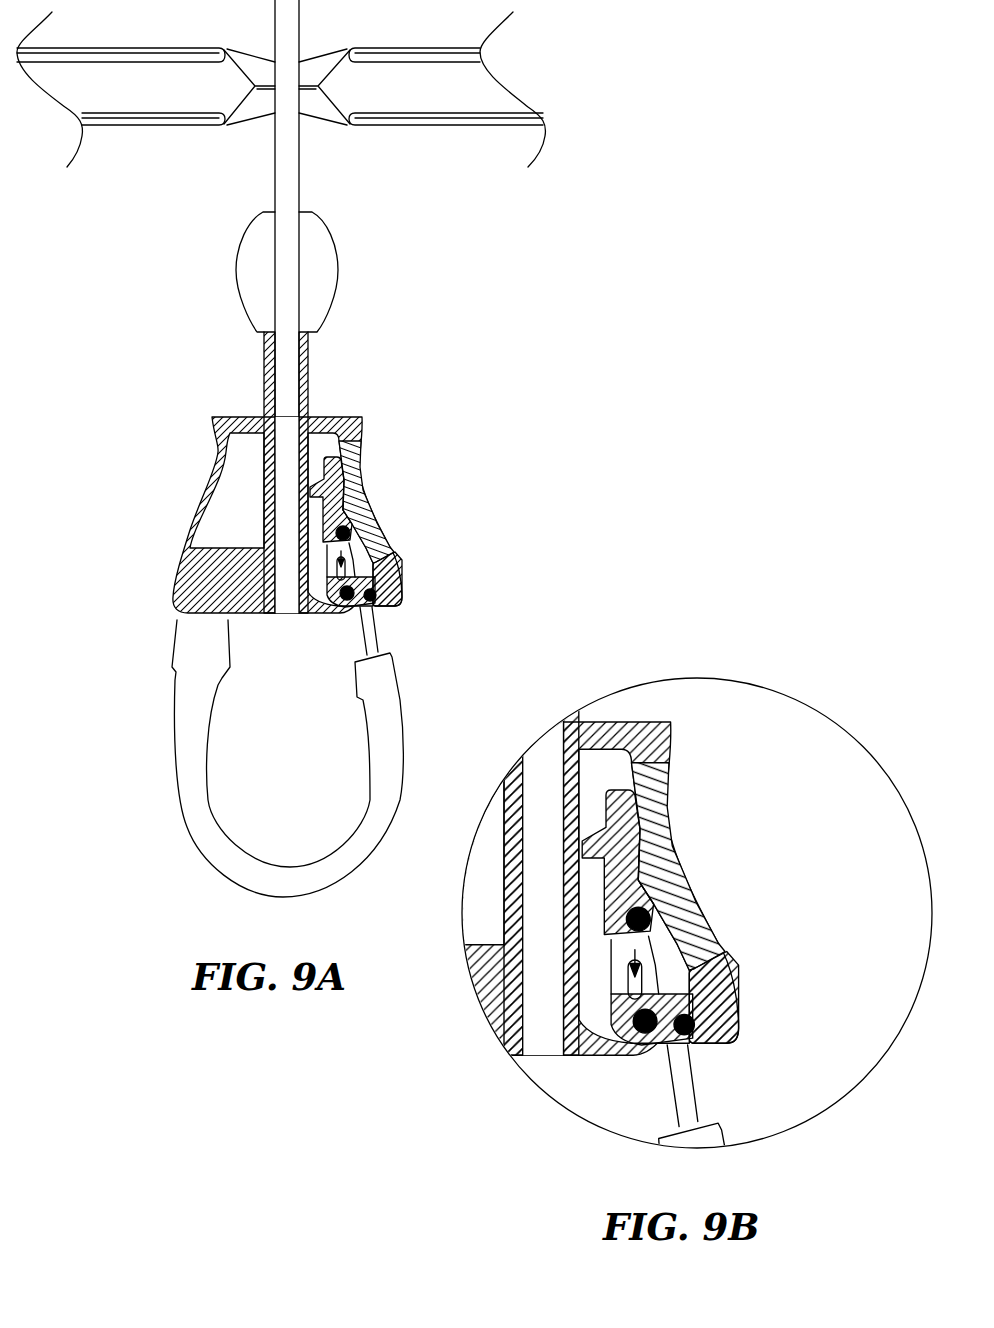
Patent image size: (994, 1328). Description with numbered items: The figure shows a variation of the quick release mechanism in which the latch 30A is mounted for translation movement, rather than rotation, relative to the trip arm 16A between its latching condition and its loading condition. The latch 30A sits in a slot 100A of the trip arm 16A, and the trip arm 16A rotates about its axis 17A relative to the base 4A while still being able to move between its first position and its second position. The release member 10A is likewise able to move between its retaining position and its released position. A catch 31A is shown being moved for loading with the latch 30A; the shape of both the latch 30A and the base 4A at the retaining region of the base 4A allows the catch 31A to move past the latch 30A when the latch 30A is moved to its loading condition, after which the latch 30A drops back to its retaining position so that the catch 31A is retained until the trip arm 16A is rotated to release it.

The release member 10A is at (655, 743).
The trip arm 16A is at (618, 820).
The axis 17A is at (650, 900).
The slot 100A is at (623, 963).
The latch 30A is at (722, 978).
The base 4A is at (730, 1005).
The catch 31A is at (682, 1082).